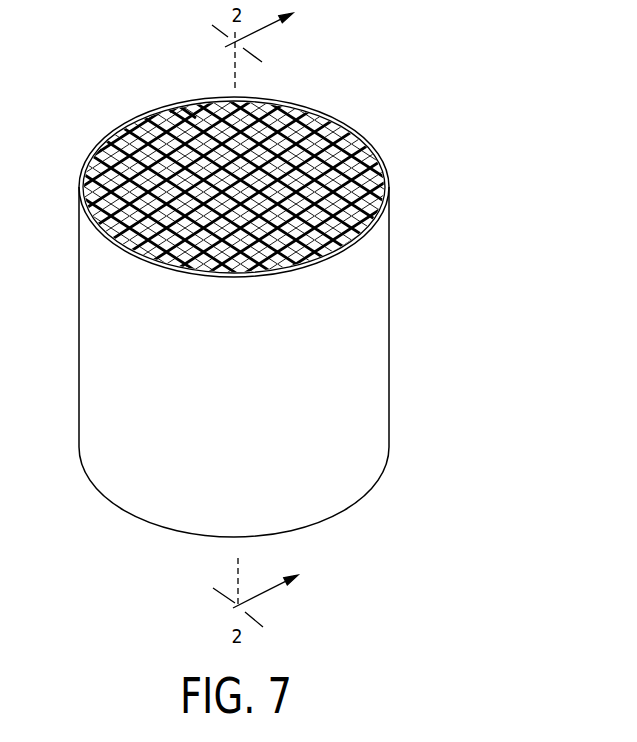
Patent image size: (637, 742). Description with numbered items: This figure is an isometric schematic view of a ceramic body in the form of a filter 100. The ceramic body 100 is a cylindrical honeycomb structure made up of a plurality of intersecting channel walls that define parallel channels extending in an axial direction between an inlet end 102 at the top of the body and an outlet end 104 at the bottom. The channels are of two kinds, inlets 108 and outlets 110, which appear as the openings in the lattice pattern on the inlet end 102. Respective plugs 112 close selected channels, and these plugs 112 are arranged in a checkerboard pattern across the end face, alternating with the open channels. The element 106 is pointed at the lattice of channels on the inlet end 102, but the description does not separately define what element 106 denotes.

The honeycomb body 100 is at (454, 104).
The first end face 102 is at (372, 135).
The outer peripheral wall 104 is at (338, 512).
The cells 106 is at (308, 120).
The cell walls 108 is at (153, 117).
The outer skin 110 is at (122, 127).
The struts 112 is at (180, 105).